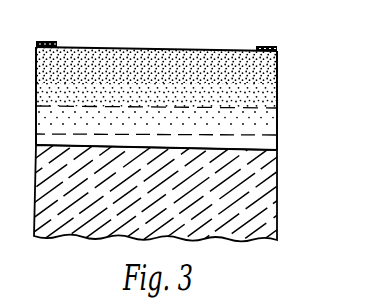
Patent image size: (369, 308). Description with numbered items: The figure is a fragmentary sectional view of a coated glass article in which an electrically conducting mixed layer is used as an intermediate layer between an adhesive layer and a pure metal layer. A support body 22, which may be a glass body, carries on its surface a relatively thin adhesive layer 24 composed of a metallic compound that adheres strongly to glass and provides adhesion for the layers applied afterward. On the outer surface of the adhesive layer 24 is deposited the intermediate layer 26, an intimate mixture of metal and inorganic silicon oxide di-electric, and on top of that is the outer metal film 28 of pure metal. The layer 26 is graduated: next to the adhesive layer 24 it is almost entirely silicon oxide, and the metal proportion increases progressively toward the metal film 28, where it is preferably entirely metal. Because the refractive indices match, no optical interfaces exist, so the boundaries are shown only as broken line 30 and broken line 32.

The support body 22 is at (235, 194).
The adhesive layer 24 is at (237, 143).
The intermediate layer 26 is at (240, 119).
The metal film 28 is at (162, 68).
The broken line 30 is at (228, 137).
The broken line 32 is at (247, 103).